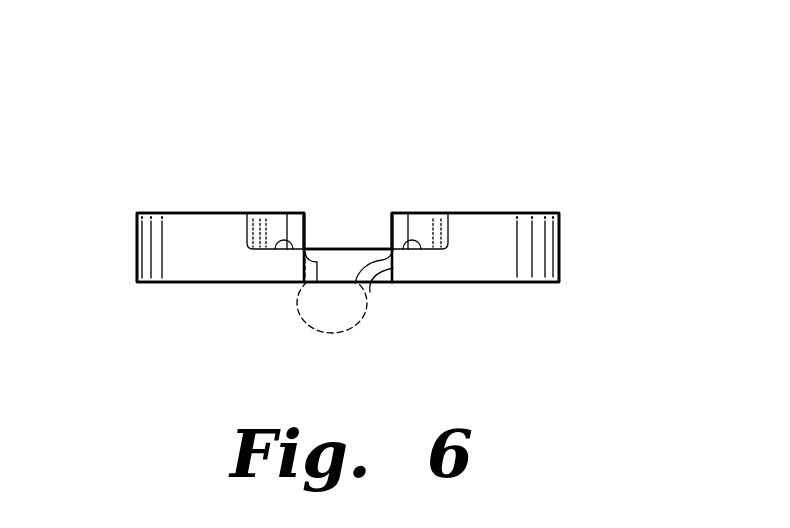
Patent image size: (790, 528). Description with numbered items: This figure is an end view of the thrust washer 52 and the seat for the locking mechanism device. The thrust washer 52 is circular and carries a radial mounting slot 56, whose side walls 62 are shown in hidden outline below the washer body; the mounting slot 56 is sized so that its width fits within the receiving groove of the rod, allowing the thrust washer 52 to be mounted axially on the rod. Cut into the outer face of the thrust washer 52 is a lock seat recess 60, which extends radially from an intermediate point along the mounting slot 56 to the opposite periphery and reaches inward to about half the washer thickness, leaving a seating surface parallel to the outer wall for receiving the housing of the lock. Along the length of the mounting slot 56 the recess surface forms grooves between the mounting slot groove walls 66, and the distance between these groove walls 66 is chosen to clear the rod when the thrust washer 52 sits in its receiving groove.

The thrust washer 52 is at (560, 228).
The radial mounting slot 56 is at (370, 292).
The lock seat recess 60 is at (352, 247).
The side walls 62 is at (332, 321).
The mounting slot groove walls 66 is at (311, 216).